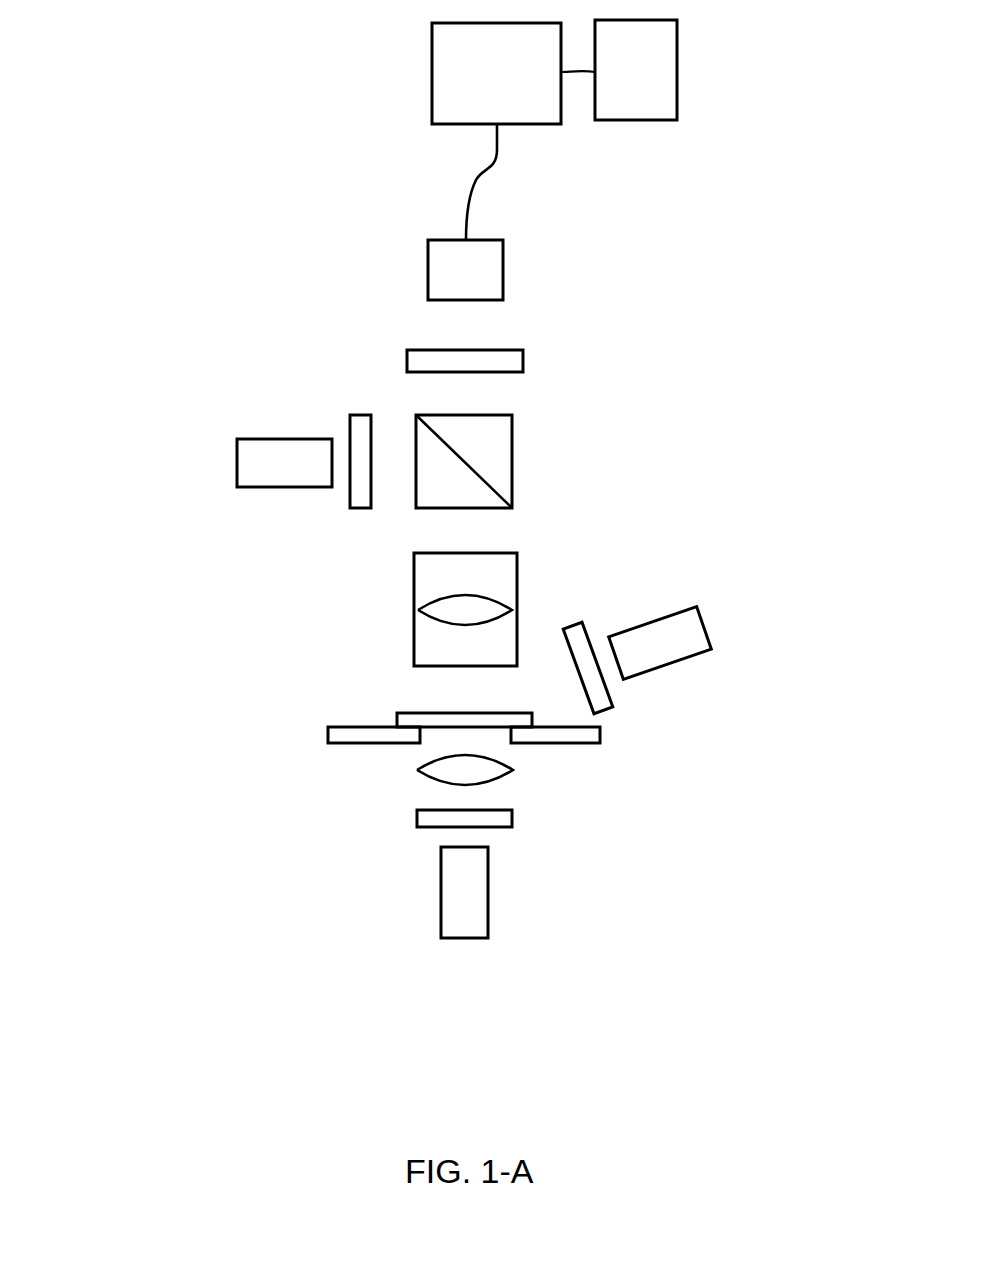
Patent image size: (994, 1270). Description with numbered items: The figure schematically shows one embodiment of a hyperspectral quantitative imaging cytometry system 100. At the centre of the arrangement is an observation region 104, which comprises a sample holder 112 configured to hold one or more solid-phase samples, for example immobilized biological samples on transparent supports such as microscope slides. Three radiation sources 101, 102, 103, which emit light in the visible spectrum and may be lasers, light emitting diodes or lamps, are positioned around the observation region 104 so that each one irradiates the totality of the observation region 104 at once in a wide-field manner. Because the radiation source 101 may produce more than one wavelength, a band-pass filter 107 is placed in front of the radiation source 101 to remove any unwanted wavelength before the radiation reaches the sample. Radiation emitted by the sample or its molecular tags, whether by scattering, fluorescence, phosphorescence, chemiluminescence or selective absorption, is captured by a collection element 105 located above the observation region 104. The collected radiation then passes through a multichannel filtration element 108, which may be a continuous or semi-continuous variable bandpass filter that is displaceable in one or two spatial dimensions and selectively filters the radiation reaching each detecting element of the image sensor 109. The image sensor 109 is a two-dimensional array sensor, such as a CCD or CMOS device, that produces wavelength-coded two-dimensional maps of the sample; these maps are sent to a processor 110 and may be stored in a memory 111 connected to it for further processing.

The hyperspectral quantitative imaging cytometry system 100 is at (731, 965).
The radiation source 101 is at (230, 455).
The radiation source 102 is at (713, 618).
The radiation source 103 is at (472, 950).
The observation region 104 is at (456, 704).
The collection element 105 is at (405, 608).
The band-pass filter 107 is at (361, 405).
The multichannel filtration element 108 is at (533, 358).
The image sensor 109 is at (512, 267).
The processor 110 is at (428, 72).
The memory 111 is at (684, 76).
The sample holder 112 is at (320, 741).